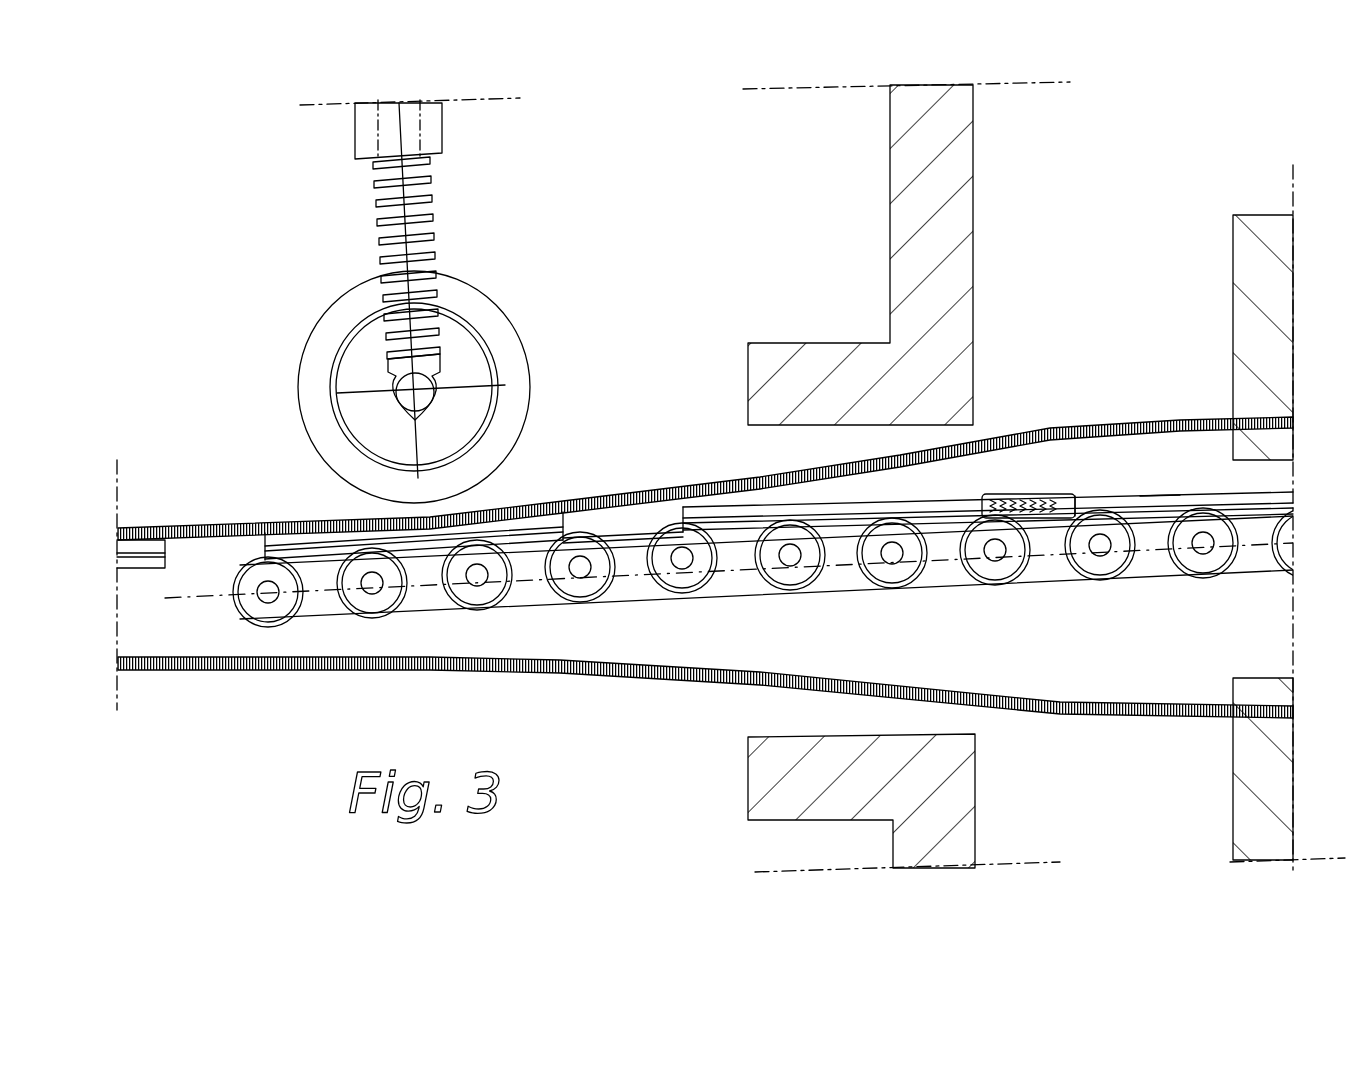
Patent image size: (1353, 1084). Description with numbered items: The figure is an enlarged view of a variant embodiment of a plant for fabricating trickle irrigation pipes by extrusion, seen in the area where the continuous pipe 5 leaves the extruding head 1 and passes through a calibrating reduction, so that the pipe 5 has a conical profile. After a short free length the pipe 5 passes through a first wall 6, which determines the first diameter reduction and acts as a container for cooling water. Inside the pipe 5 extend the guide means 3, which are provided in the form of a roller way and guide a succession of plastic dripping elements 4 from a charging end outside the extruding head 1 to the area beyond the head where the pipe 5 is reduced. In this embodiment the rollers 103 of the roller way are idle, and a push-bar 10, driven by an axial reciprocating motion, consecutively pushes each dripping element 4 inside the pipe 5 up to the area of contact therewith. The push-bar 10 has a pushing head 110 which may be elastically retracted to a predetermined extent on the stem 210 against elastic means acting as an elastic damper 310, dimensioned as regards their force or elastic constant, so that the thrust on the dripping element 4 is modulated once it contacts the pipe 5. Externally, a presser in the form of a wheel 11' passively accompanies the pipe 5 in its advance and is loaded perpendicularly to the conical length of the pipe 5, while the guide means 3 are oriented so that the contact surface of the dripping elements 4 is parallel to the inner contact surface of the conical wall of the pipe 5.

The extruding head 1 is at (1262, 208).
The guide means 3 is at (753, 536).
The dripping element 4 is at (296, 528).
The pipe 5 is at (1133, 412).
The first wall 6 is at (973, 222).
The push-bar 10 is at (1213, 487).
The wheel 11' is at (452, 301).
The rollers of the roller way 103 is at (590, 601).
The pushing head 110 is at (993, 494).
The stem 210 is at (1162, 496).
The elastic damper 310 is at (1053, 490).